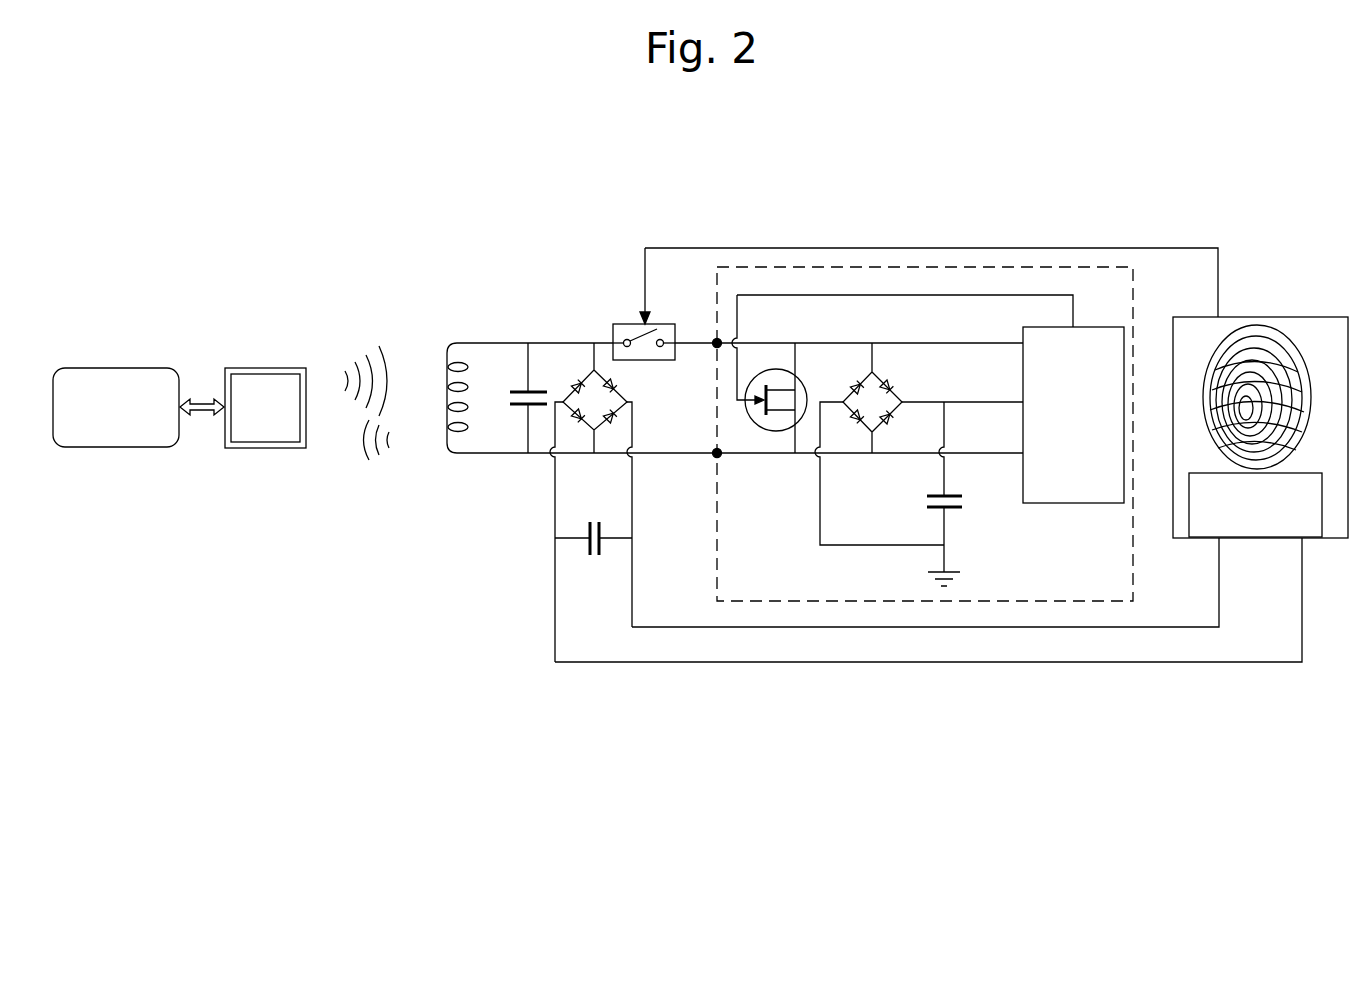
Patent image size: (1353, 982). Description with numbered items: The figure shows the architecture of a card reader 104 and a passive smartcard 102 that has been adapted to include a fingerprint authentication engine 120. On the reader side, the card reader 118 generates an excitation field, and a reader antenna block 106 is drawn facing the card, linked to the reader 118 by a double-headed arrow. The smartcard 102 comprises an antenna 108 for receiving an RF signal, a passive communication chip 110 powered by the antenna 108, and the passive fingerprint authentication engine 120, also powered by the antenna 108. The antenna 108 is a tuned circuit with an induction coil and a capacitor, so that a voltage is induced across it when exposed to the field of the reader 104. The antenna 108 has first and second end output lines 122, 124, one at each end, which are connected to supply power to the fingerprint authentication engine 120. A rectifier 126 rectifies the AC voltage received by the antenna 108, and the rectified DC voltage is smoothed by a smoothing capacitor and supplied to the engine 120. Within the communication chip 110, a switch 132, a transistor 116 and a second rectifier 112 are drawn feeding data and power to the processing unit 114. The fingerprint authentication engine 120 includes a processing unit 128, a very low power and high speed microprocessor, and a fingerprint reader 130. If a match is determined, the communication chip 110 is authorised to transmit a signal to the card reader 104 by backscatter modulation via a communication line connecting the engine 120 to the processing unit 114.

The passive smartcard 102 is at (1063, 134).
The card reader 104 is at (204, 262).
The reader antenna 106 is at (265, 450).
The antenna 108 is at (446, 368).
The passive communication chip 110 is at (805, 266).
The second rectifier bridge 112 is at (868, 452).
The processing unit 114 is at (1103, 326).
The transistor switch 116 is at (768, 370).
The card reader 118 is at (112, 449).
The fingerprint authentication engine 120 is at (1252, 316).
The first end output line 122 is at (477, 342).
The second end output line 124 is at (492, 454).
The rectifier 126 is at (590, 371).
The processing unit 128 is at (1262, 527).
The fingerprint reader 130 is at (1292, 343).
The switch 132 is at (625, 323).